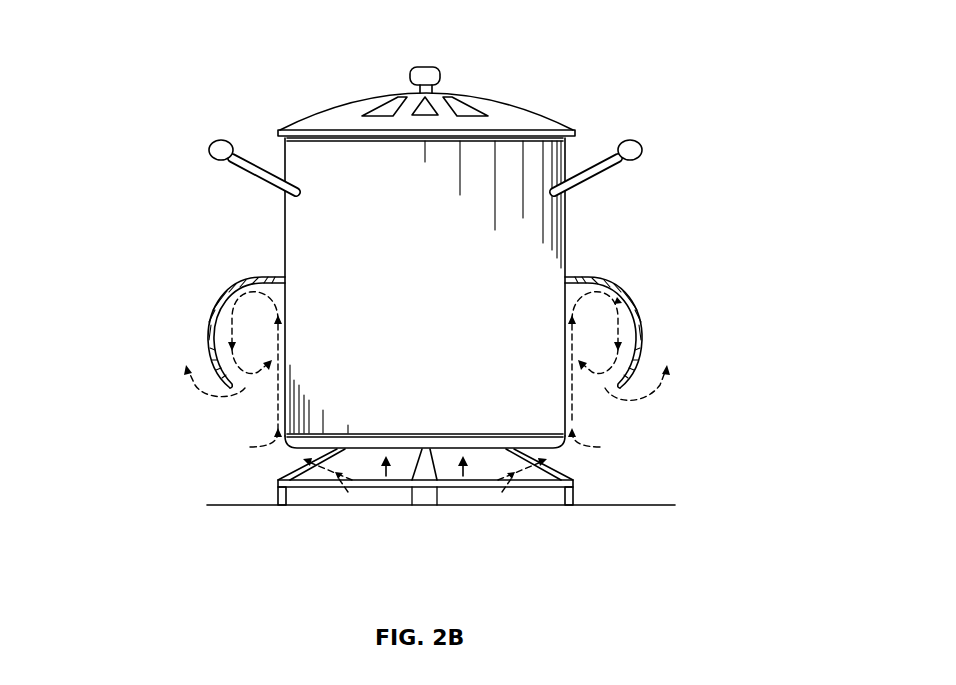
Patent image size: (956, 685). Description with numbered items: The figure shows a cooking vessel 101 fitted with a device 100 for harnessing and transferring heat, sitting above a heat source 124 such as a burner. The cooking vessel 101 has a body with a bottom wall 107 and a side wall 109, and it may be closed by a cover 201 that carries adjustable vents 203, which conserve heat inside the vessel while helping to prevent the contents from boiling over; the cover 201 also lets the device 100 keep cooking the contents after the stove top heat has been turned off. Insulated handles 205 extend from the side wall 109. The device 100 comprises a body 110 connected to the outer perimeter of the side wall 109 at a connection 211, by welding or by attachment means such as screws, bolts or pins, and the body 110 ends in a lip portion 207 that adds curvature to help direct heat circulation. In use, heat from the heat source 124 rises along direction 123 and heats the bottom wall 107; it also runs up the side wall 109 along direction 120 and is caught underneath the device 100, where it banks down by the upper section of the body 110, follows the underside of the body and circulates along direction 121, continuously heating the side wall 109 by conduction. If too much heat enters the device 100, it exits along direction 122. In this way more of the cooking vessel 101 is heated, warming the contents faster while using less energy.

The device 100 is at (203, 279).
The cooking vessel 101 is at (256, 81).
The bottom wall 107 is at (285, 438).
The side wall 109 is at (560, 218).
The body 110 is at (210, 337).
The direction 120 is at (575, 443).
The direction 121 is at (612, 293).
The direction 122 is at (668, 375).
The direction 123 is at (466, 482).
The heat source 124 is at (560, 492).
The cover 201 is at (542, 100).
The adjustable vents 203 is at (390, 100).
The insulated handles 205 is at (215, 140).
The lip portion 207 is at (233, 386).
The connection 211 is at (268, 276).